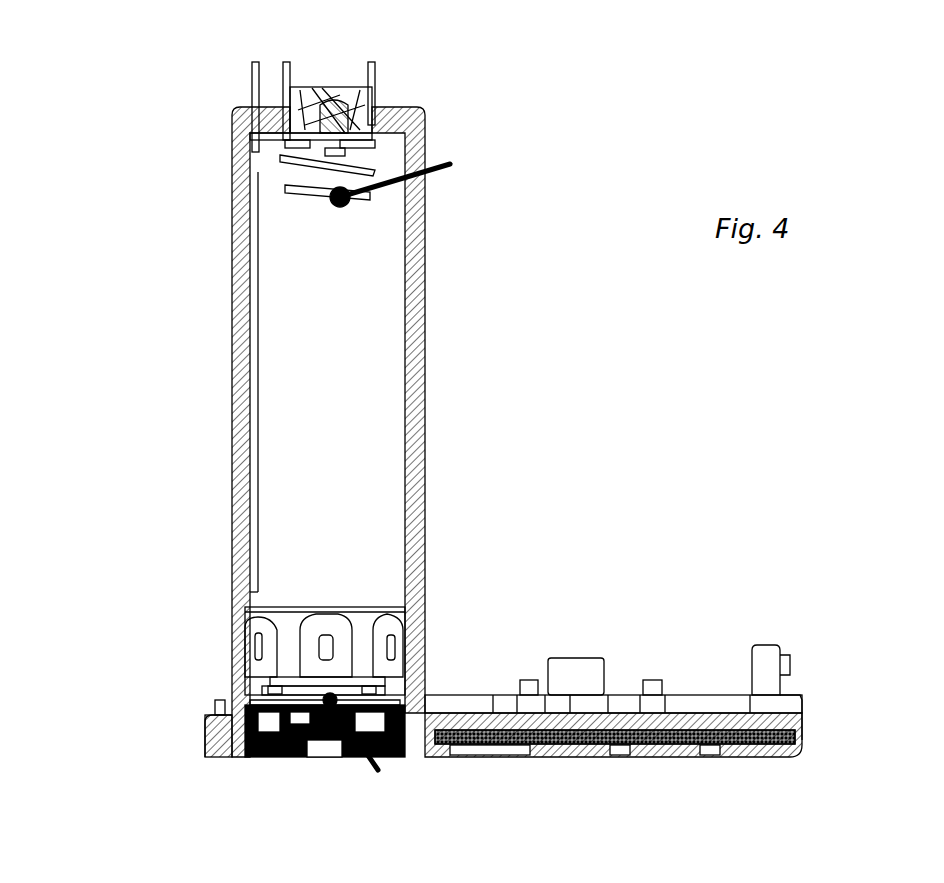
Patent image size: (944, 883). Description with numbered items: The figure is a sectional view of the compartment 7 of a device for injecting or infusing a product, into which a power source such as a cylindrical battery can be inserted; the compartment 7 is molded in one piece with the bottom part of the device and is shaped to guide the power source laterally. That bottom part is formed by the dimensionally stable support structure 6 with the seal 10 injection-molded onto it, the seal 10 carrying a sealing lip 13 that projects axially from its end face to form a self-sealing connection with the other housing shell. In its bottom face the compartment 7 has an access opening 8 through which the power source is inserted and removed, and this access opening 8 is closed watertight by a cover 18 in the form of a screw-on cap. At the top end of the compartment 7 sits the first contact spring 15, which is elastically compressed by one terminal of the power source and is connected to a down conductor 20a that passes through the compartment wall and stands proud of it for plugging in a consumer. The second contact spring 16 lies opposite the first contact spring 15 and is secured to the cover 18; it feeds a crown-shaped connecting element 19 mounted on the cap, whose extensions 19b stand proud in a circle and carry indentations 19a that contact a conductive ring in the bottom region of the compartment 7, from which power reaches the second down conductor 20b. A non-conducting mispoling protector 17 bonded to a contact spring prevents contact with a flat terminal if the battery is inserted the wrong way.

The support structure 6 is at (706, 693).
The compartment 7 is at (425, 412).
The access opening 8 is at (323, 777).
The seal 10 is at (593, 758).
The sealing lip 13 is at (218, 705).
The first contact spring 15 is at (393, 175).
The second contact spring 16 is at (370, 749).
The mispoling protector 17 is at (332, 675).
The cover 18 is at (247, 760).
The connecting element 19 is at (385, 693).
The indentations 19a is at (328, 645).
The extensions 19b is at (338, 627).
The down conductor 20a is at (290, 76).
The down conductor 20b is at (250, 88).